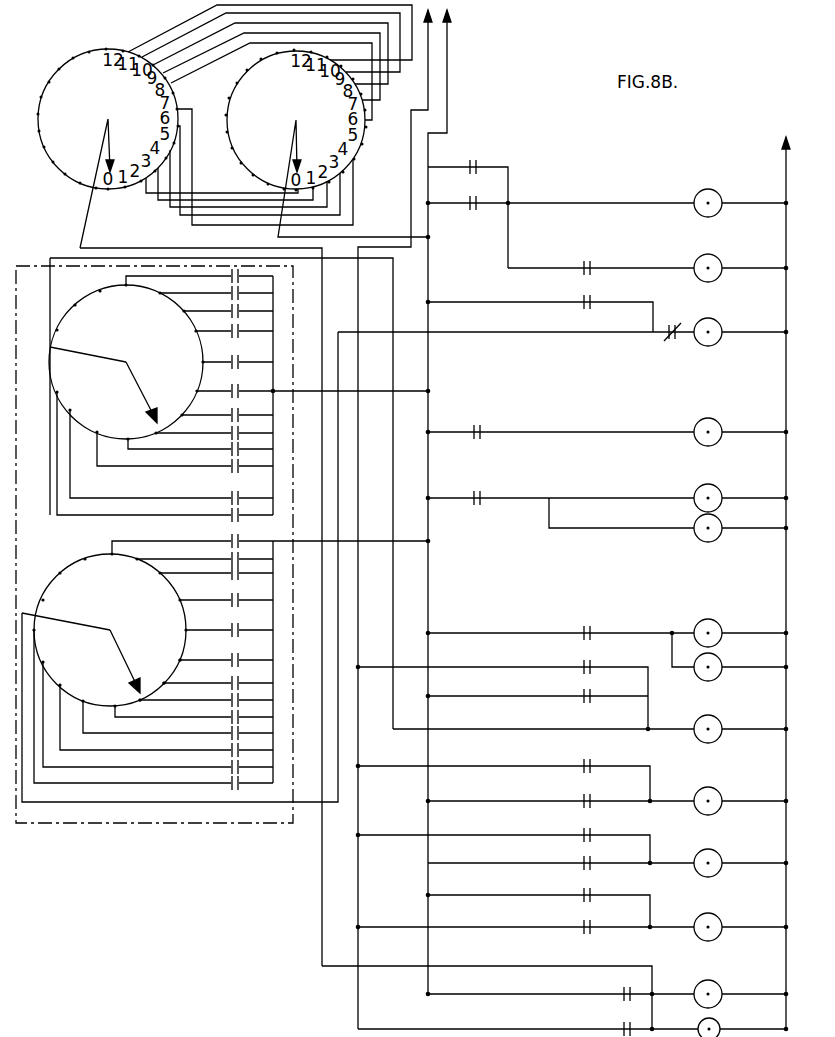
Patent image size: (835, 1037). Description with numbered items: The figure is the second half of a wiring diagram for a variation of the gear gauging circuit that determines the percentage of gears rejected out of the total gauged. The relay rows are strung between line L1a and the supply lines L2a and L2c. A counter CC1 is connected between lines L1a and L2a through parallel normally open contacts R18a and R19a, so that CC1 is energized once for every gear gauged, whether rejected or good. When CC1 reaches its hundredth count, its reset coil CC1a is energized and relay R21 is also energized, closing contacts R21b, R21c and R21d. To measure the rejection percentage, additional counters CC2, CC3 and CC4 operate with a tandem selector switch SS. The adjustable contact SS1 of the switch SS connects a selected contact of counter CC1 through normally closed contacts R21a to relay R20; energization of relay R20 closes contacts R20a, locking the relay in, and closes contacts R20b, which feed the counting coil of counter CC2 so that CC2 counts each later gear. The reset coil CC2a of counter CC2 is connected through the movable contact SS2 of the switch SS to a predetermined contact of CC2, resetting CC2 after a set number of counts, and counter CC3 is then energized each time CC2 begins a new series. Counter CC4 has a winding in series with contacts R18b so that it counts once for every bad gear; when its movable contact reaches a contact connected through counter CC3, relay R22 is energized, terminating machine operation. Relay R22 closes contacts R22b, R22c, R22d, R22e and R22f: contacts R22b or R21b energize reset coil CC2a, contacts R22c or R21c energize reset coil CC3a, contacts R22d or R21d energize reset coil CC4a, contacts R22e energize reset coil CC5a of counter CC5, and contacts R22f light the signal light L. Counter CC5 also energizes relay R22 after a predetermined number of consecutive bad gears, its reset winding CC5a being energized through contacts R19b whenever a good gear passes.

The line L2a is at (447, 65).
The supply line L2c is at (428, 89).
The line L1a is at (786, 163).
The normally open contacts of relay R19 R19a is at (478, 167).
The normally open contacts of relay R18 R18a is at (471, 201).
The counter CC1 is at (721, 196).
The normally open contacts of relay R20 R20b is at (592, 267).
The counter CC2 is at (721, 262).
The normally open contacts of relay R20 R20a is at (592, 301).
The normally closed contacts of relay R21 R21a is at (672, 342).
The relay R20 is at (720, 326).
The counter CC3 is at (730, 416).
The normally open relay contacts of relay R18 R18b is at (482, 498).
The fourth counter CC4 is at (720, 475).
The counter CC5 is at (667, 534).
The reset coil of counter CC1 CC1a is at (708, 619).
The normally open contacts of relay R22 R22b is at (582, 666).
The relay R21 is at (722, 668).
The normally open contacts of relay R21 R21b is at (582, 696).
The reset coil of counter CC2 CC2a is at (708, 715).
The normally open contacts of relay R22 R22c is at (582, 766).
The normally open contacts of relay R21 R21c is at (582, 800).
The reset coil of counter CC3 CC3a is at (708, 787).
The normally open contacts of relay R22 R22d is at (582, 834).
The normally open contacts of relay R21 R21d is at (582, 862).
The reset coil of counter CC4 CC4a is at (708, 849).
The normally open contacts of relay R19 R19b is at (582, 894).
The normally open contacts of relay R22 R22e is at (582, 926).
The reset winding of counter CC5 CC5a is at (708, 913).
The relay R22 is at (740, 982).
The normally open contacts of relay R22 R22f is at (620, 1028).
The signal light L is at (722, 1027).
The tandem selector switch SS is at (163, 826).
The movable contact of selector switch SS2 is at (143, 390).
The adjustable contact of selector switch SS1 is at (125, 662).